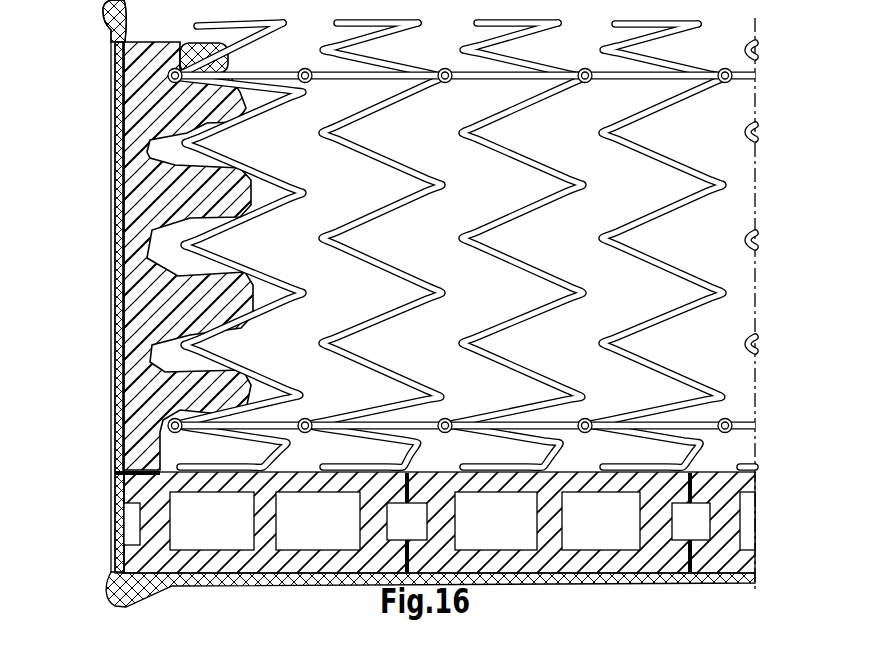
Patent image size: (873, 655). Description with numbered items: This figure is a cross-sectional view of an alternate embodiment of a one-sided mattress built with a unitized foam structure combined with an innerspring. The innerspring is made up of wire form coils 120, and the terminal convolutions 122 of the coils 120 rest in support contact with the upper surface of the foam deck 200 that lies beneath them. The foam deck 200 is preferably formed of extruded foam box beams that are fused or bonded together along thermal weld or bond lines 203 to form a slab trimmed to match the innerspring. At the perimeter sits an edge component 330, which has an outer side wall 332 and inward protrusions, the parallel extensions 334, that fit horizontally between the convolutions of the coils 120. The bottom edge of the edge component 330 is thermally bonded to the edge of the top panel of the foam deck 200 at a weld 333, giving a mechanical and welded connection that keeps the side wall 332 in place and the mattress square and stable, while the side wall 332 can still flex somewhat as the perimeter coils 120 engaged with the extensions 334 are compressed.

The wire form coil 120 is at (690, 207).
The terminal convolution 122 is at (657, 23).
The foam deck 200 is at (258, 556).
The thermal weld or bond line 203 is at (697, 565).
The edge component 330 is at (102, 268).
The outer side wall 332 is at (110, 300).
The weld 333 is at (111, 490).
The parallel extension 334 is at (220, 182).